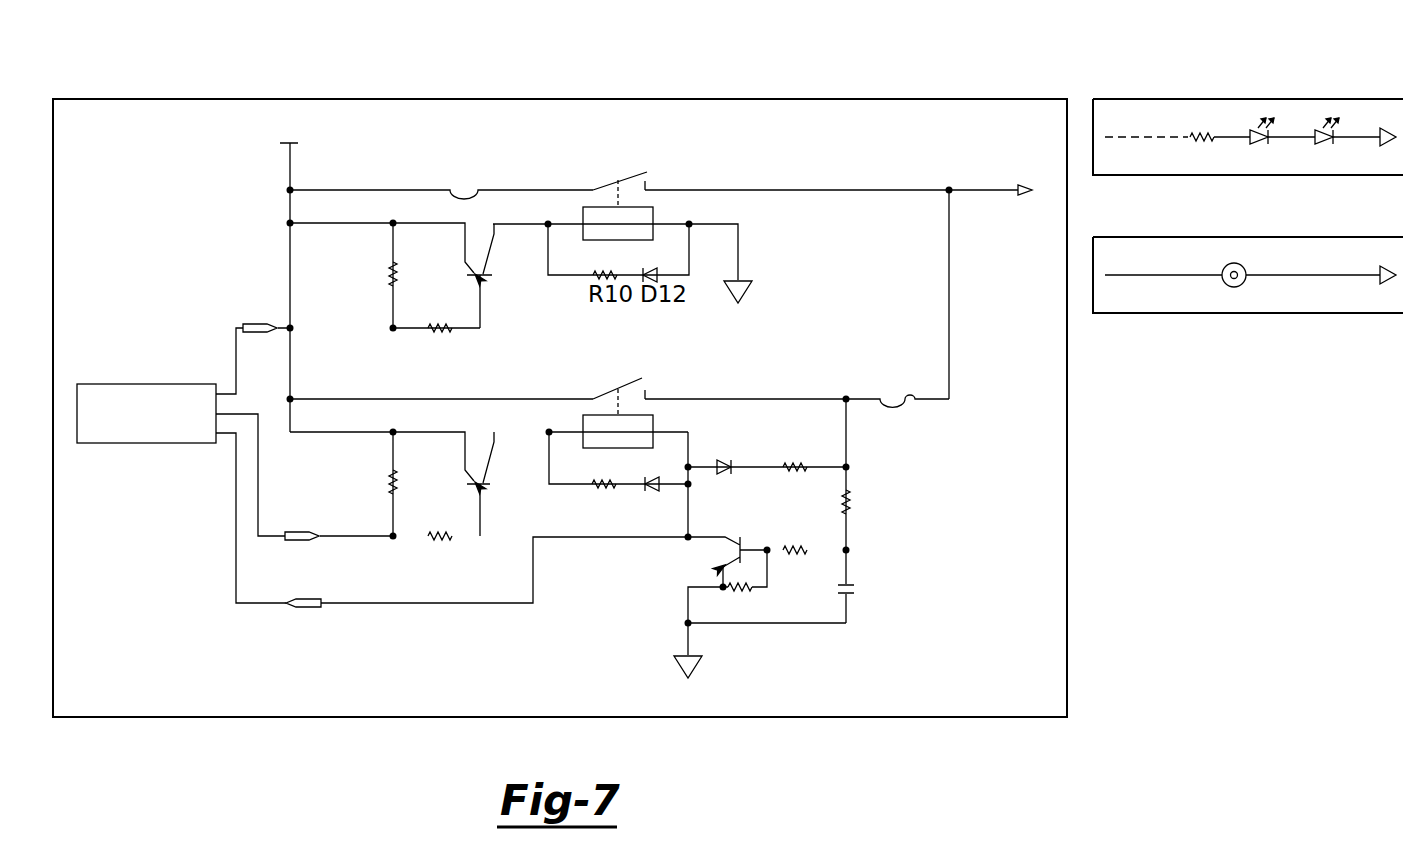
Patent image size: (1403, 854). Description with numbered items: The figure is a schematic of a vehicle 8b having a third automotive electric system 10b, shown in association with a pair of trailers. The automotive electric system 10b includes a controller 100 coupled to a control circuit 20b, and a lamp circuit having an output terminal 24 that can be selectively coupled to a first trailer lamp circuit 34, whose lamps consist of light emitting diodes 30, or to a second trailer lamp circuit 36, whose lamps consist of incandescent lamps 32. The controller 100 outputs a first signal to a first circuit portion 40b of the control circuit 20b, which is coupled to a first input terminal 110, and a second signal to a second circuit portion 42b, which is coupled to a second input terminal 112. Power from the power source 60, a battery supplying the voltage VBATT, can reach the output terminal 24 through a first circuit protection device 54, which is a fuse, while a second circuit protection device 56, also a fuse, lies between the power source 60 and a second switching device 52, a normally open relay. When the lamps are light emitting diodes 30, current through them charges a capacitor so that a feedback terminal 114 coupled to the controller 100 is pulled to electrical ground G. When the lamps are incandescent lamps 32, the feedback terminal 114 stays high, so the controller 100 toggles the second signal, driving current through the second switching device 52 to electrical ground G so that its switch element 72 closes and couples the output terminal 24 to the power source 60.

The vehicle 8b is at (759, 88).
The automotive electric system 10b is at (326, 682).
The control circuit 20b is at (400, 627).
The output terminal 24 is at (1022, 184).
The light emitting diodes 30 is at (1249, 127).
The incandescent lamps 32 is at (1234, 287).
The first trailer lamp circuit 34 is at (1248, 104).
The second trailer lamp circuit 36 is at (1248, 307).
The first circuit portion 40b is at (864, 467).
The second circuit portion 42b is at (402, 342).
The second switching device 52 is at (654, 219).
The first circuit protection device 54 is at (904, 396).
The second circuit protection device 56 is at (472, 186).
The power source 60 is at (294, 108).
The switch element 72 is at (630, 174).
The controller 100 is at (175, 383).
The first input terminal 110 is at (302, 535).
The second input terminal 112 is at (264, 324).
The feedback terminal 114 is at (308, 610).
The electrical ground G is at (1392, 128).